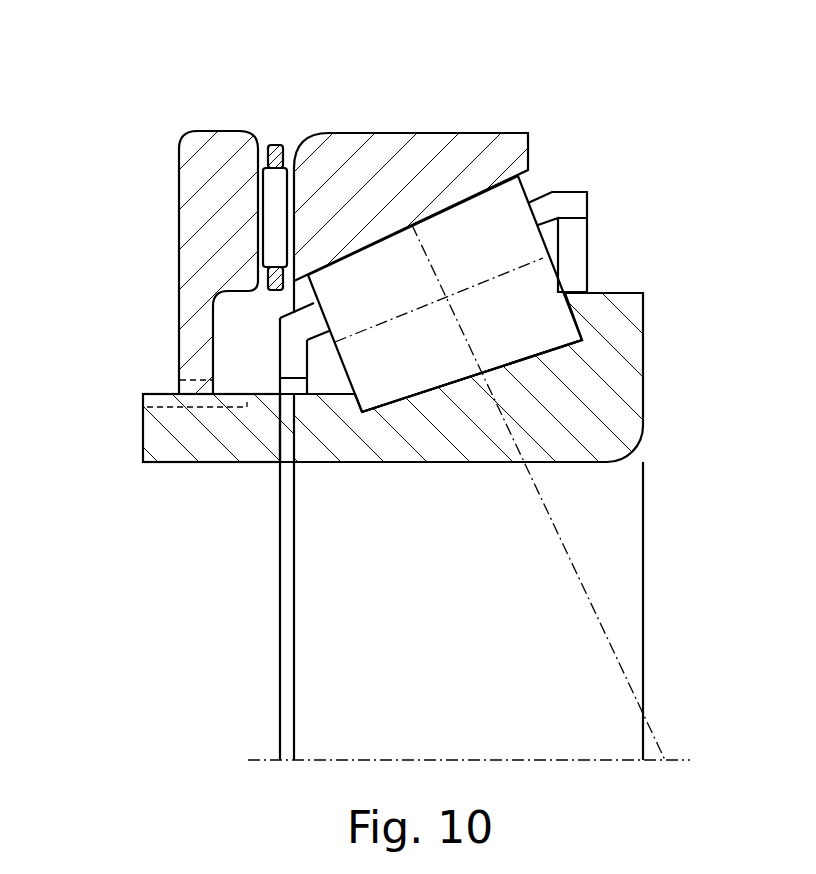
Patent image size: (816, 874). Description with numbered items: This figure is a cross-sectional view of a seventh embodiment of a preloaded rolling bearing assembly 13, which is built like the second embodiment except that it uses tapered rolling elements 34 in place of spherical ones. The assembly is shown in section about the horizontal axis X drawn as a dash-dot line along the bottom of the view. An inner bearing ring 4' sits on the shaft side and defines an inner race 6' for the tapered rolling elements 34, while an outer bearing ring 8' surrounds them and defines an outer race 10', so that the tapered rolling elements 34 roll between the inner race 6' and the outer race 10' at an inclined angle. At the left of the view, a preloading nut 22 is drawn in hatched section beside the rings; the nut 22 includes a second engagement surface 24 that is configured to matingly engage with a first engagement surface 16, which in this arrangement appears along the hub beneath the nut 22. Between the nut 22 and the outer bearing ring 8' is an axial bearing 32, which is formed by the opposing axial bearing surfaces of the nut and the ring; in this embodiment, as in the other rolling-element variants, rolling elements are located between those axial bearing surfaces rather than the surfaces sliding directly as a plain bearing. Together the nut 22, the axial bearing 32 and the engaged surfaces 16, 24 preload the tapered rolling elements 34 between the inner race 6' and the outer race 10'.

The nut 22 is at (217, 152).
The axial bearing 32 is at (276, 150).
The outer bearing ring 8' is at (411, 177).
The outer race 10' is at (500, 389).
The rolling bearing assembly 13 is at (441, 130).
The tapered rolling elements 34 is at (505, 205).
The second engagement surface 24 is at (178, 380).
The first engagement surface 16 is at (143, 400).
The inner bearing ring 4' is at (514, 377).
The inner race 6' is at (549, 415).
The axis of rotation X is at (262, 760).